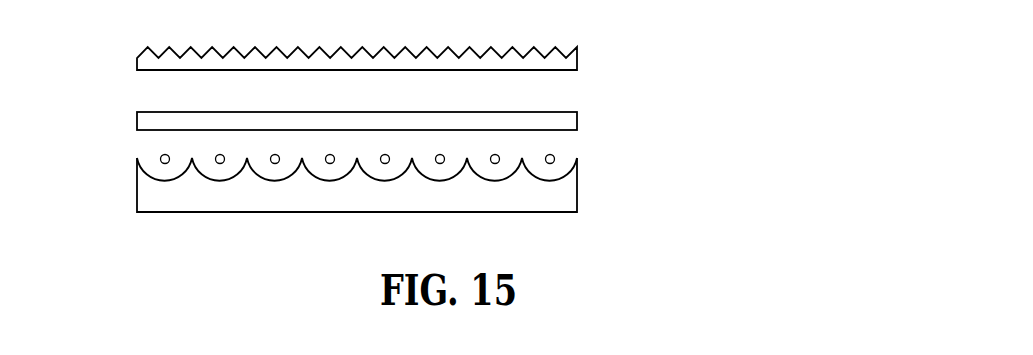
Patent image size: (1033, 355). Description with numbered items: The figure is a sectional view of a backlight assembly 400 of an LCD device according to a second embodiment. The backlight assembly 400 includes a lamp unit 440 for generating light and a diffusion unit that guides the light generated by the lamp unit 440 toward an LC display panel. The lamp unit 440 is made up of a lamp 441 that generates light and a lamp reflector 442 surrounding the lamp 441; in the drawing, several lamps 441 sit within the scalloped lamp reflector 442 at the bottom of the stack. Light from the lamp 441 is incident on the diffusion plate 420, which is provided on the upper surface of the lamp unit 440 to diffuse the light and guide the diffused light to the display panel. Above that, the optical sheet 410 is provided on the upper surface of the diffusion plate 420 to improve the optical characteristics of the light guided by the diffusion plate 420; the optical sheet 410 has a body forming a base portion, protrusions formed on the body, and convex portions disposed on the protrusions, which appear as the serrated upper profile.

The backlight assembly 400 is at (723, 12).
The optical sheet 410 is at (579, 57).
The diffusion plate 420 is at (579, 123).
The lamp unit 440 is at (302, 182).
The lamp 441 is at (160, 158).
The lamp reflector 442 is at (138, 194).